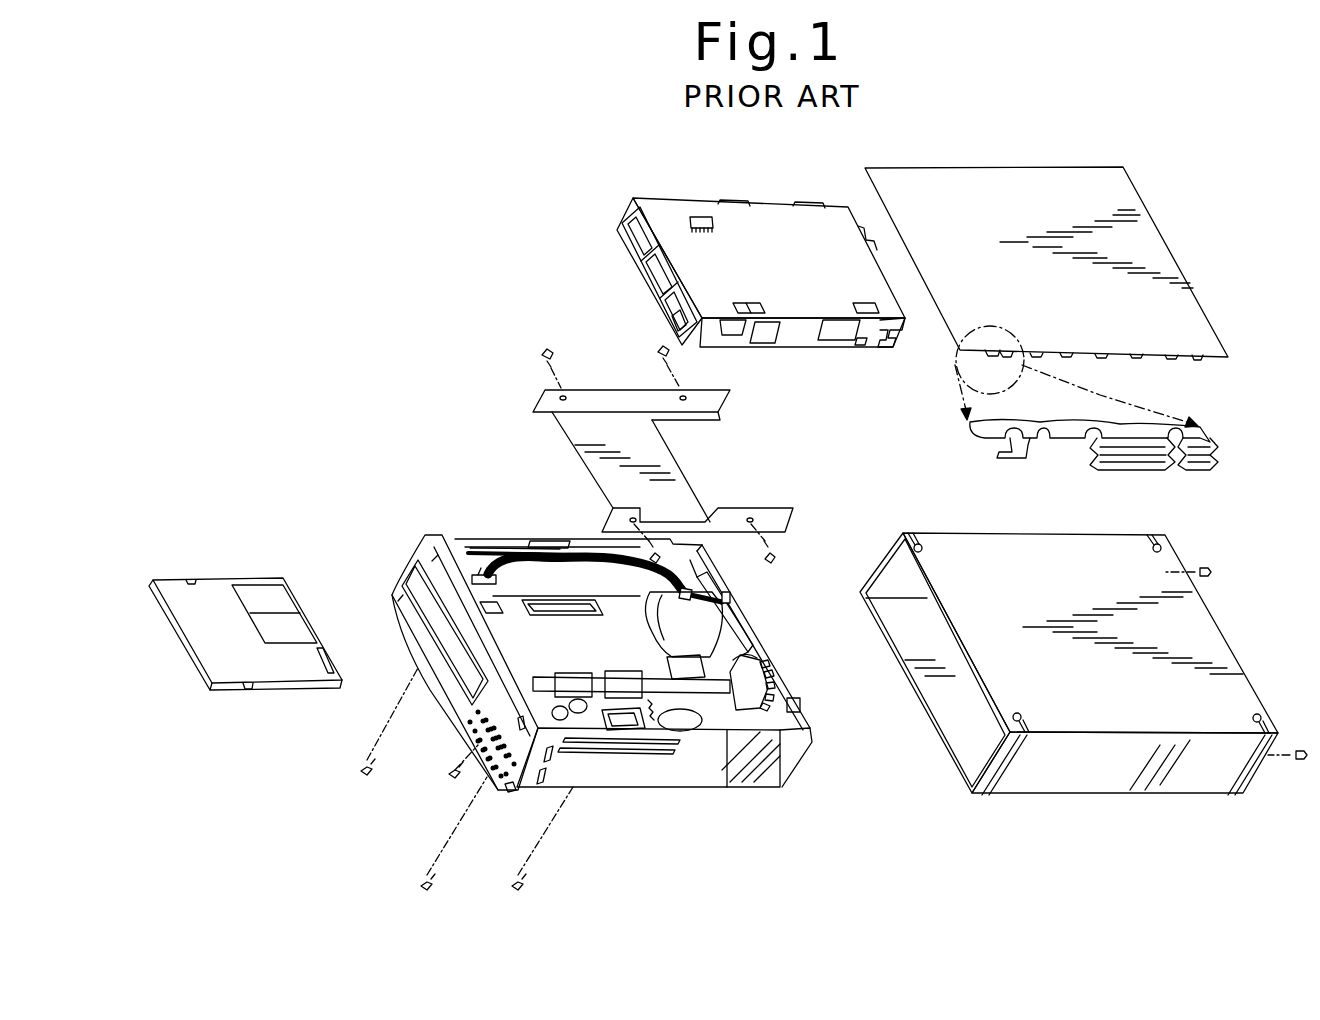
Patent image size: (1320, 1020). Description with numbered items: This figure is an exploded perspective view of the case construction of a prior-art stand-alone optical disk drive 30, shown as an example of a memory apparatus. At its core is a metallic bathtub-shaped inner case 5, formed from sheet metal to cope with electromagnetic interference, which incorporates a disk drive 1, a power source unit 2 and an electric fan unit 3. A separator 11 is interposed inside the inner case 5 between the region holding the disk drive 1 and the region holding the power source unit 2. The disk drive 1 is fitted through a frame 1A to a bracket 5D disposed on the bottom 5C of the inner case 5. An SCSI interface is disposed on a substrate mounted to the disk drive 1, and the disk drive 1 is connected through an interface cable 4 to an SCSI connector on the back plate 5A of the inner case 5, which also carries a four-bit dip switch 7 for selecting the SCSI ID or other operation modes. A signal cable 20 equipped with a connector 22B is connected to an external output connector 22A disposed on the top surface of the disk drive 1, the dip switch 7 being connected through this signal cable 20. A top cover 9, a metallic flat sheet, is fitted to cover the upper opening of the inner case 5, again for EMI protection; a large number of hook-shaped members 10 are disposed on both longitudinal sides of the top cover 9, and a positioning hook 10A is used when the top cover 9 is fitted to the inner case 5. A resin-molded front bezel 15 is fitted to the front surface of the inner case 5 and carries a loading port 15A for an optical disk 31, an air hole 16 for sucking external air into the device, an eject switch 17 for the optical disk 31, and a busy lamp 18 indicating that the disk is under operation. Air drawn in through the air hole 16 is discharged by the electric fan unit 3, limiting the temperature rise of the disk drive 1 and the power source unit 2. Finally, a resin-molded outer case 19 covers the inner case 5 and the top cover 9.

The optical disk drive 30 is at (438, 311).
The disk drive 1 is at (788, 222).
The frame 1A is at (560, 425).
The external output connector 22A is at (697, 216).
The connector 22B is at (472, 542).
The eject switch 17 is at (673, 323).
The top cover 9 is at (1125, 216).
The hook-shaped member 10 is at (1135, 462).
The positioning hook 10A is at (1018, 458).
The signal cable 20 is at (520, 543).
The inner case 5 is at (651, 777).
The back plate 5A is at (742, 604).
The bottom 5C is at (547, 548).
The bracket 5D is at (548, 615).
The dip switch 7 is at (727, 600).
The interface cable 4 is at (663, 622).
The electric fan unit 3 is at (748, 683).
The separator 11 is at (610, 675).
The power source unit 2 is at (689, 722).
The front bezel 15 is at (397, 597).
The loading port 15A is at (458, 668).
The air hole 16 is at (483, 767).
The busy lamp 18 is at (512, 793).
The outer case 19 is at (1088, 783).
The optical disk 31 is at (270, 670).